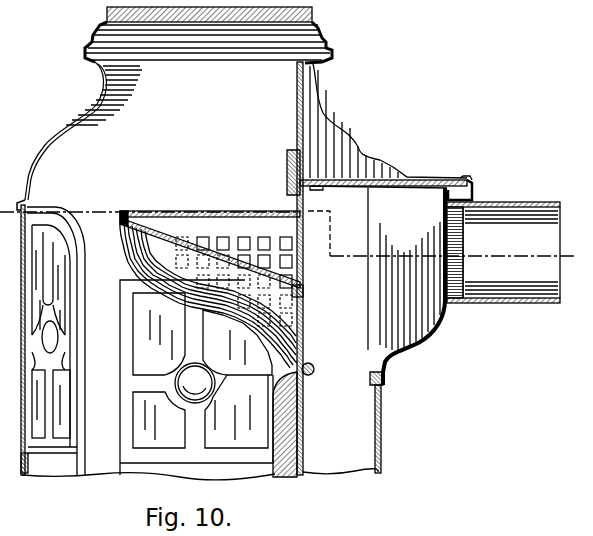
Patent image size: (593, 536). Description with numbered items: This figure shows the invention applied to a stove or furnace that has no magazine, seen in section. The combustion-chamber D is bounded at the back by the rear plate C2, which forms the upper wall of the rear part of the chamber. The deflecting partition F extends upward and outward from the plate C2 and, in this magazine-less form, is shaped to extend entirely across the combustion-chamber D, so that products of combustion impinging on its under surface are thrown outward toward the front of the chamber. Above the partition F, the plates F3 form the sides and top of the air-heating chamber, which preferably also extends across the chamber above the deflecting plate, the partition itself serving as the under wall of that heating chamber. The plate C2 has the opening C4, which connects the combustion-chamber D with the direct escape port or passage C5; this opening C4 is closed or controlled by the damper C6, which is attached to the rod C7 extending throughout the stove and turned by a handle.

The partition F is at (125, 249).
The plates F3 is at (212, 203).
The opening C4 is at (302, 286).
The damper C6 is at (303, 316).
The rod C7 is at (314, 370).
The rear plate C2 is at (304, 420).
The direct escape port or passage C5 is at (374, 331).
The combustion-chamber D is at (66, 341).